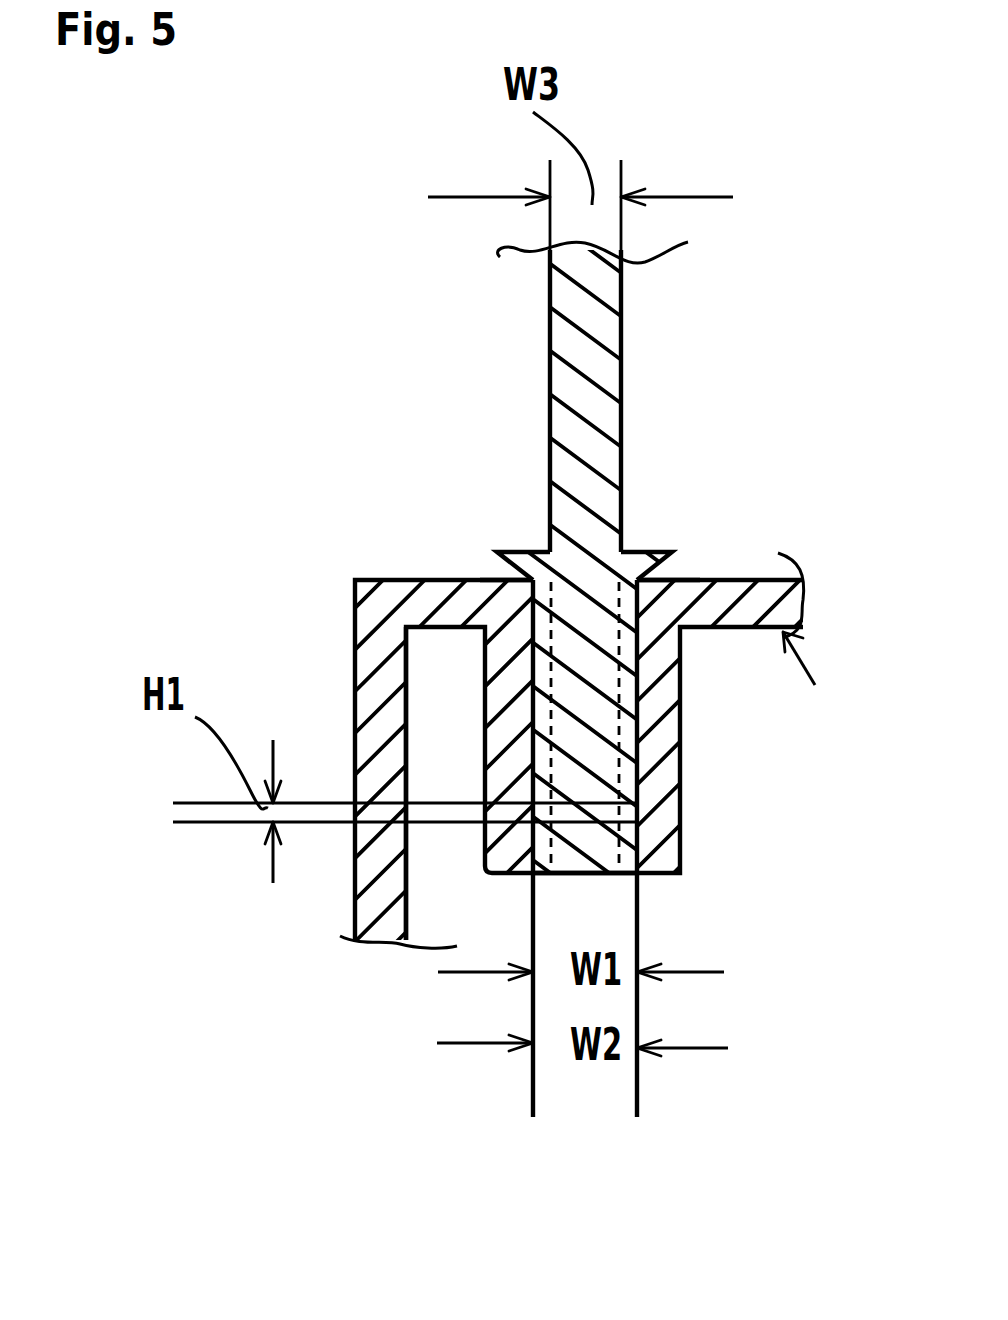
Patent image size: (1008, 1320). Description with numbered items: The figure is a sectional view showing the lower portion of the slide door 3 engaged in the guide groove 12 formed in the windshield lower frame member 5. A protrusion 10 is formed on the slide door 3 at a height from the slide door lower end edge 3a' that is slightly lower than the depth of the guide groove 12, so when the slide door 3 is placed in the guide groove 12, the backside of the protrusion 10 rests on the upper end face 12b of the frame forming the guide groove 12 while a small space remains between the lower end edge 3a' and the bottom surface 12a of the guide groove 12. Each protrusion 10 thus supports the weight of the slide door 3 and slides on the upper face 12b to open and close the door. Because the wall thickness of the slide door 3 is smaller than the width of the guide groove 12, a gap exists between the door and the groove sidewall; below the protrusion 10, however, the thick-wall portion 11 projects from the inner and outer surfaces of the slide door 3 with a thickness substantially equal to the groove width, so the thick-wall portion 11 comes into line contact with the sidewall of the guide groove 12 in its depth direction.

The slide door 3 is at (622, 343).
The windshield lower frame member 5 is at (355, 683).
The protrusion 10 is at (495, 552).
The thick-wall portion 11 is at (640, 683).
The guide groove 12 is at (594, 752).
The bottom surface of the guide groove 12a is at (592, 805).
The upper end face of the frame 12b is at (486, 572).
The slide door lower end edge 3a' is at (664, 909).